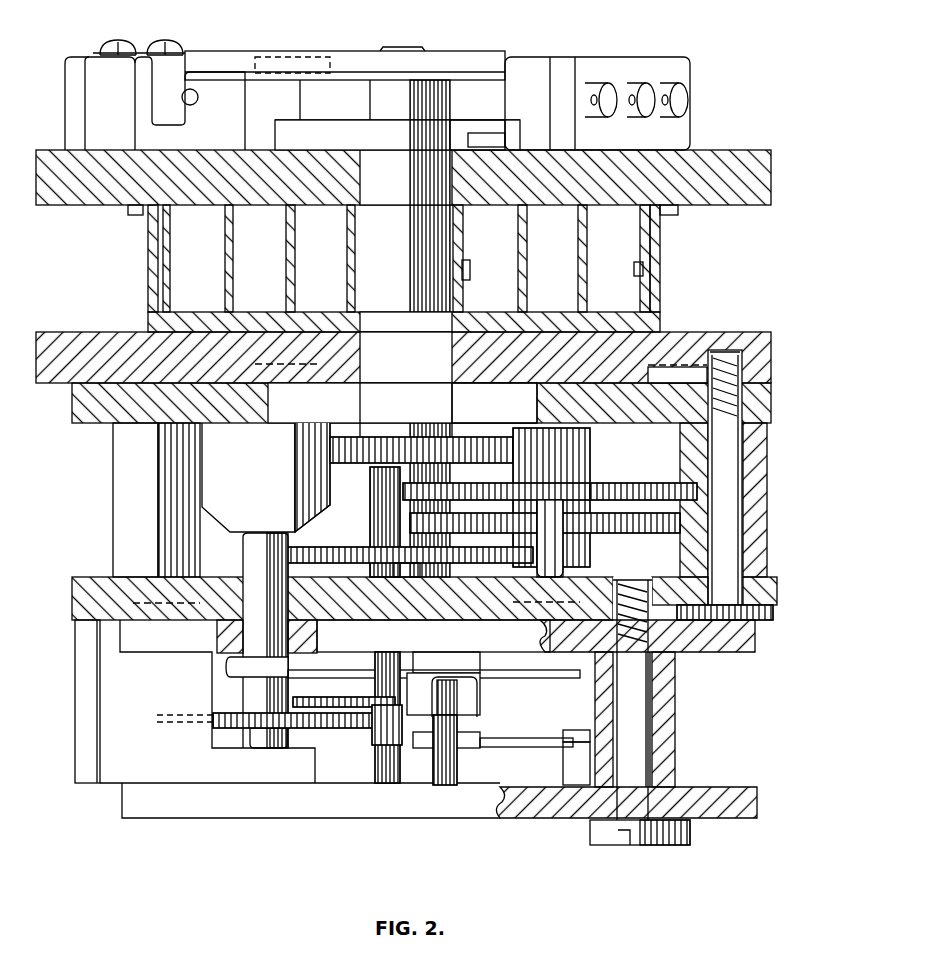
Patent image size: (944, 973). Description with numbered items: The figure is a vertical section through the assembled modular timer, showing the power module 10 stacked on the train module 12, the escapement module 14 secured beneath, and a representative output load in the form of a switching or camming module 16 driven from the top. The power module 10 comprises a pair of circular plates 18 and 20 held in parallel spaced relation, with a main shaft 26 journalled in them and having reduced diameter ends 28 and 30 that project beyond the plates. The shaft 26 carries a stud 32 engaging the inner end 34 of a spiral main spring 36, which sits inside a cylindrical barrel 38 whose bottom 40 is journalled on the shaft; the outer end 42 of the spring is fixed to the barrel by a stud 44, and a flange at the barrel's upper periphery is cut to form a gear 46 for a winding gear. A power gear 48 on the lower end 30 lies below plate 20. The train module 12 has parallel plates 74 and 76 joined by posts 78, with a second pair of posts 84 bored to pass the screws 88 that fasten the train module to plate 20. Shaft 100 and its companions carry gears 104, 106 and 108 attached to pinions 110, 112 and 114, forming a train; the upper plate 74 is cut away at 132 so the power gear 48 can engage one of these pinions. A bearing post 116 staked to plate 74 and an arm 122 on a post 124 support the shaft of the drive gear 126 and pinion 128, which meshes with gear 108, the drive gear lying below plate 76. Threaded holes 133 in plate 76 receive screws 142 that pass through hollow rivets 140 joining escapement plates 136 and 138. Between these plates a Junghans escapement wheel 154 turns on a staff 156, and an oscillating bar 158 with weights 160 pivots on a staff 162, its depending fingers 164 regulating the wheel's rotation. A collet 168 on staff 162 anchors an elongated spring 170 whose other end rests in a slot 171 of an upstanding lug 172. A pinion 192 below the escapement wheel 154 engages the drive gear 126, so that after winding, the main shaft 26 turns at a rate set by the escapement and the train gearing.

The power module 10 is at (95, 270).
The train module 12 is at (95, 527).
The escapement module 14 is at (88, 800).
The switching or camming module 16 is at (44, 78).
The circular plate 18 is at (63, 206).
The circular plate 20 is at (72, 332).
The main shaft 26 is at (418, 275).
The reduced diameter end 28 is at (410, 191).
The reduced diameter end 30 is at (418, 373).
The stud 32 is at (470, 268).
The inner end of main spring 34 is at (463, 233).
The spiral main spring 36 is at (286, 243).
The cylindrical barrel 38 is at (148, 293).
The barrel bottom 40 is at (192, 312).
The outer end of main spring 42 is at (640, 235).
The stud 44 is at (634, 270).
The gear 46 is at (138, 216).
The power gear 48 is at (405, 440).
The plate 74 is at (770, 420).
The plate 76 is at (773, 607).
The posts 78 is at (125, 478).
The posts 84 is at (767, 549).
The screws 88 is at (745, 500).
The shaft 100 is at (566, 565).
The gear 104 is at (508, 520).
The gear 106 is at (500, 490).
The gear 108 is at (320, 547).
The pinion 110 is at (600, 507).
The pinion 112 is at (590, 452).
The pinion 114 is at (370, 487).
The bearing post 116 is at (265, 481).
The arm 122 is at (197, 770).
The post 124 is at (87, 722).
The drive gear 126 is at (290, 737).
The pinion 128 is at (255, 638).
The cutaway 132 is at (537, 406).
The screwthreaded holes 133 is at (630, 580).
The plate 136 is at (737, 653).
The plate 138 is at (722, 820).
The hollow rivets 140 is at (675, 753).
The screws 142 is at (655, 725).
The Junghans escapement wheel 154 is at (317, 692).
The staff 156 is at (378, 772).
The oscillating bar 158 is at (347, 672).
The weights 160 is at (313, 643).
The staff 162 is at (437, 770).
The depending fingers 164 is at (462, 705).
The collet 168 is at (467, 752).
The elongated spring 170 is at (510, 750).
The slot 171 is at (570, 733).
The upstanding lug 172 is at (580, 730).
The pinion 192 is at (382, 725).